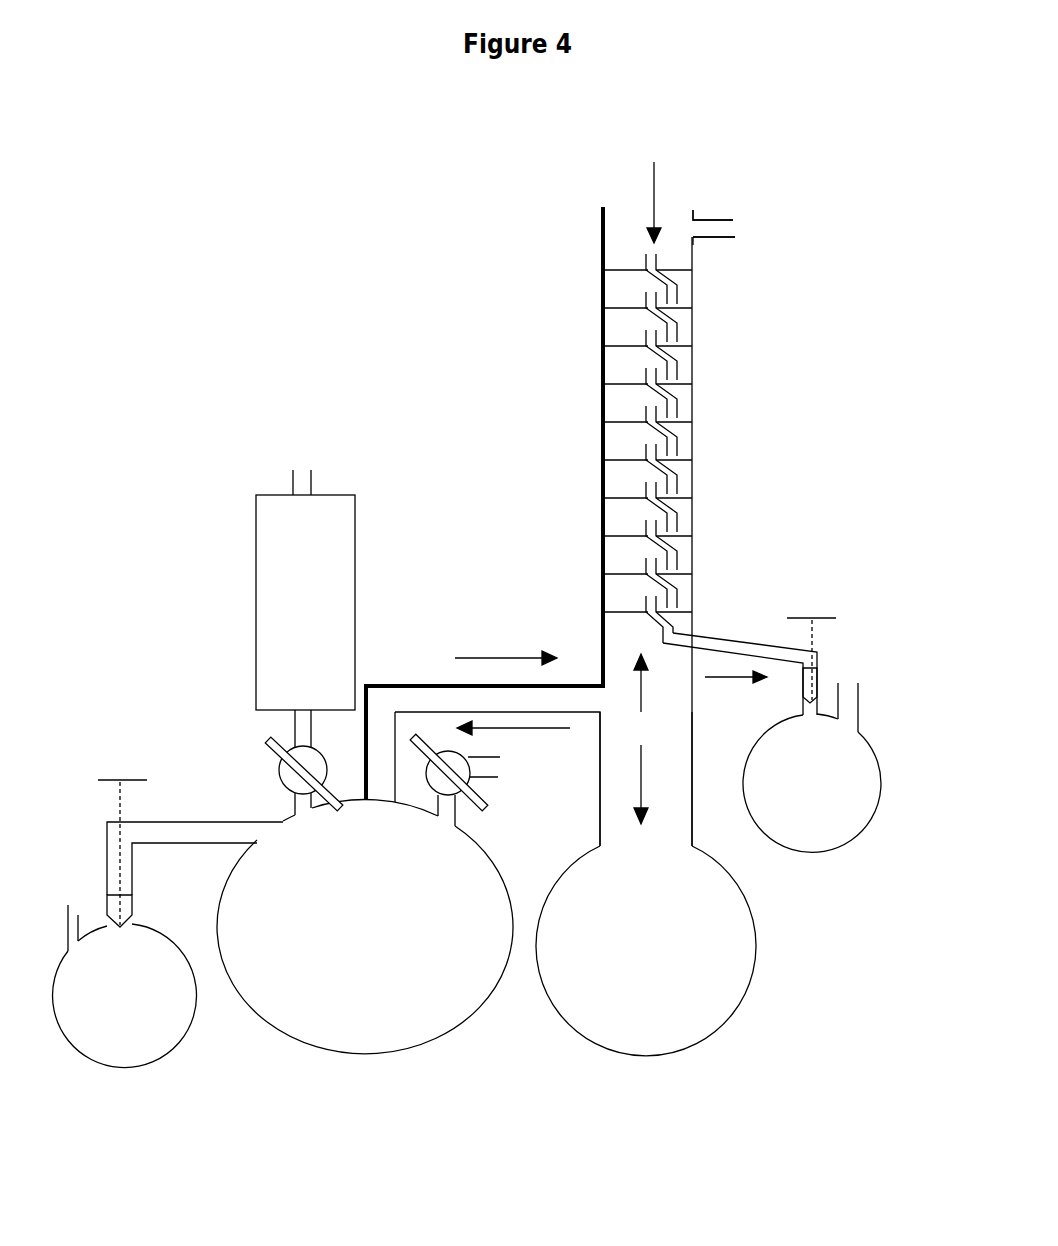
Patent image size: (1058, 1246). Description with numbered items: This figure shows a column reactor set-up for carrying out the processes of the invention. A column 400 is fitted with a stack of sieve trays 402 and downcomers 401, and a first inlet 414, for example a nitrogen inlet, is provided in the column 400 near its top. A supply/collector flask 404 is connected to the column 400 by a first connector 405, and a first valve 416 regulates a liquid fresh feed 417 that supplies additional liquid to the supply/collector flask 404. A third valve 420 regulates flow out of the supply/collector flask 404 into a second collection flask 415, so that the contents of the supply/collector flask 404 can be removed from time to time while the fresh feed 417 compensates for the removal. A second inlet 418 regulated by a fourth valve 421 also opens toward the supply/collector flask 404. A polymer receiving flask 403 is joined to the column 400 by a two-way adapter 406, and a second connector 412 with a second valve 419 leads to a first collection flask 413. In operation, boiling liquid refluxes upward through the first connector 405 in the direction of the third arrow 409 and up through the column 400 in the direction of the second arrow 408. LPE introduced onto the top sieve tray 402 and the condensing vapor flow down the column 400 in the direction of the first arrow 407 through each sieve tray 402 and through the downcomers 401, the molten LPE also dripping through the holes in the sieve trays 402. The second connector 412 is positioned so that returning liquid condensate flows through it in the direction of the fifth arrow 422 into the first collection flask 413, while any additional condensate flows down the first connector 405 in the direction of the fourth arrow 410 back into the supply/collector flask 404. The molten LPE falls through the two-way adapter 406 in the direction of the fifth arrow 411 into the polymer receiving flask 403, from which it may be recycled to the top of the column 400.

The column 400 is at (597, 410).
The downcomers 401 is at (693, 284).
The sieve trays 402 is at (662, 345).
The polymer receiving flask 403 is at (697, 912).
The supply/collector flask 404 is at (450, 970).
The first connector 405 is at (404, 678).
The 2-way adapter 406 is at (733, 825).
The first arrow 407 is at (657, 187).
The second arrow 408 is at (657, 683).
The third arrow 409 is at (506, 648).
The fourth arrow 410 is at (513, 736).
The fifth arrow 411 is at (658, 784).
The second connector 412 is at (722, 630).
The first collection flask 413 is at (863, 767).
The first inlet 414 is at (748, 230).
The second collection flask 415 is at (156, 983).
The first valve 416 is at (247, 723).
The liquid fresh feed 417 is at (286, 605).
The second inlet 418 is at (497, 766).
The second valve 419 is at (813, 607).
The third valve 420 is at (117, 770).
The fourth valve 421 is at (492, 808).
The fifth arrow 422 is at (736, 687).